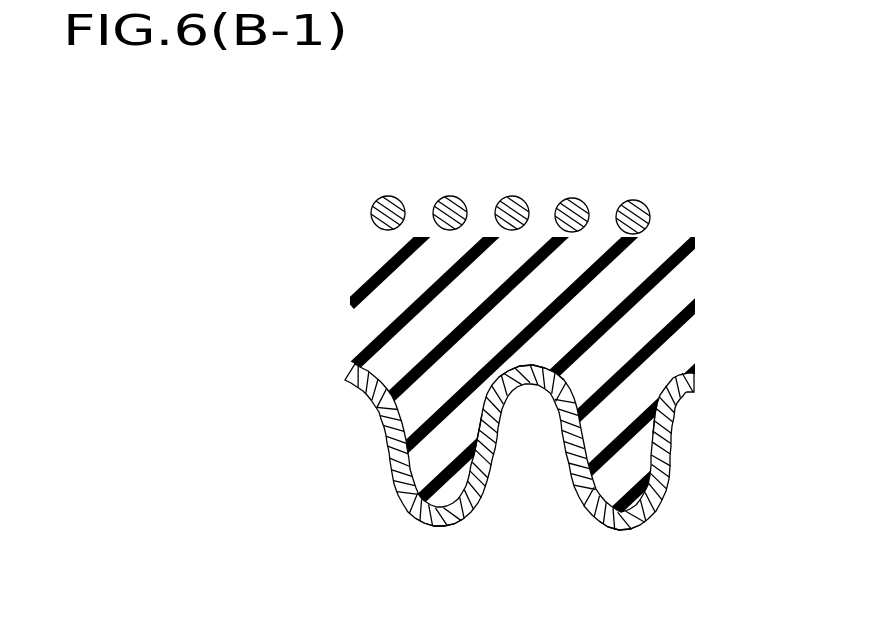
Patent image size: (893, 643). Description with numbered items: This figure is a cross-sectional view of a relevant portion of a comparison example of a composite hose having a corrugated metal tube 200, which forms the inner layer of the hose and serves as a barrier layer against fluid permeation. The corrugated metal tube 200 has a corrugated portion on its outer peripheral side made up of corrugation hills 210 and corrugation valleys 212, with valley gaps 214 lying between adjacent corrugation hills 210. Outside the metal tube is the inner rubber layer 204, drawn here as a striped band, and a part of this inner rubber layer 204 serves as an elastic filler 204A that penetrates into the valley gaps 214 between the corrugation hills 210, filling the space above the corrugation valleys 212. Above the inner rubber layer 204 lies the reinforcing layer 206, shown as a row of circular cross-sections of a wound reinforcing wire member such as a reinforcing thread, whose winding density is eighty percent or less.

The corrugated metal tube 200 is at (483, 532).
The inner rubber layer 204 is at (636, 332).
The elastic filler 204A is at (425, 470).
The reinforcing layer 206 is at (511, 200).
The corrugation hills 210 is at (527, 372).
The corrugation valleys 212 is at (436, 525).
The valley gaps 214 is at (470, 446).